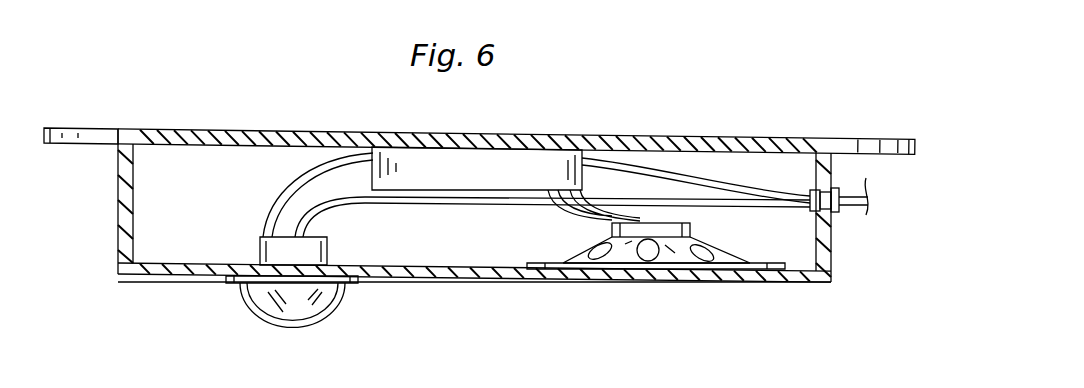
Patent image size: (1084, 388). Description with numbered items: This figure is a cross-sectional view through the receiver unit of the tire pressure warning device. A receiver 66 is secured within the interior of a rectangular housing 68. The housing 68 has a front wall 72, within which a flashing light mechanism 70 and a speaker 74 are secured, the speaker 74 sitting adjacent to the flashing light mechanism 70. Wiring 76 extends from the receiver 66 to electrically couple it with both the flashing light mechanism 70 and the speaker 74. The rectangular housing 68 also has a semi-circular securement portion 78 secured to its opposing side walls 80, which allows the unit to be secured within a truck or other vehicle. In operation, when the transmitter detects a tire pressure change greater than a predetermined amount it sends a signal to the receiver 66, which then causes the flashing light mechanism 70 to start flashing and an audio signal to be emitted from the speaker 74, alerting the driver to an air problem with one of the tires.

The receiver 66 is at (515, 152).
The rectangular housing 68 is at (242, 138).
The flashing light mechanism 70 is at (303, 308).
The front wall 72 is at (457, 277).
The speaker 74 is at (704, 282).
The wiring 76 is at (330, 166).
The semi-circular securement portion 78 is at (102, 146).
The side walls 80 is at (118, 213).